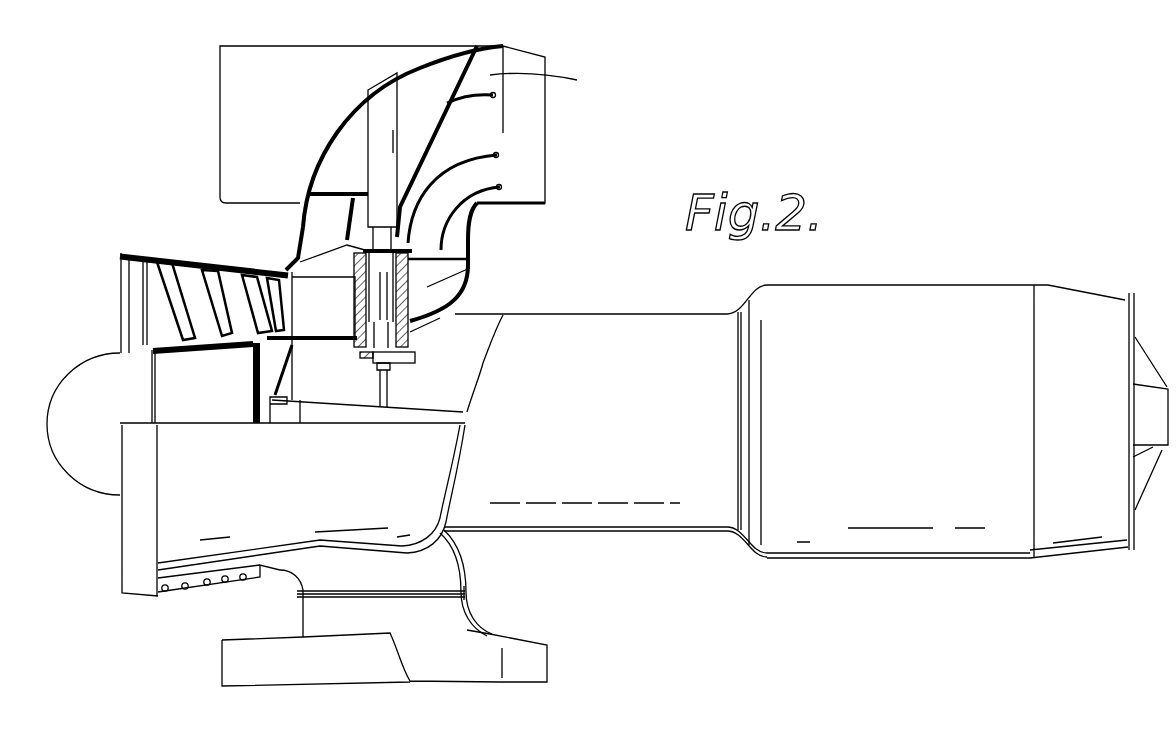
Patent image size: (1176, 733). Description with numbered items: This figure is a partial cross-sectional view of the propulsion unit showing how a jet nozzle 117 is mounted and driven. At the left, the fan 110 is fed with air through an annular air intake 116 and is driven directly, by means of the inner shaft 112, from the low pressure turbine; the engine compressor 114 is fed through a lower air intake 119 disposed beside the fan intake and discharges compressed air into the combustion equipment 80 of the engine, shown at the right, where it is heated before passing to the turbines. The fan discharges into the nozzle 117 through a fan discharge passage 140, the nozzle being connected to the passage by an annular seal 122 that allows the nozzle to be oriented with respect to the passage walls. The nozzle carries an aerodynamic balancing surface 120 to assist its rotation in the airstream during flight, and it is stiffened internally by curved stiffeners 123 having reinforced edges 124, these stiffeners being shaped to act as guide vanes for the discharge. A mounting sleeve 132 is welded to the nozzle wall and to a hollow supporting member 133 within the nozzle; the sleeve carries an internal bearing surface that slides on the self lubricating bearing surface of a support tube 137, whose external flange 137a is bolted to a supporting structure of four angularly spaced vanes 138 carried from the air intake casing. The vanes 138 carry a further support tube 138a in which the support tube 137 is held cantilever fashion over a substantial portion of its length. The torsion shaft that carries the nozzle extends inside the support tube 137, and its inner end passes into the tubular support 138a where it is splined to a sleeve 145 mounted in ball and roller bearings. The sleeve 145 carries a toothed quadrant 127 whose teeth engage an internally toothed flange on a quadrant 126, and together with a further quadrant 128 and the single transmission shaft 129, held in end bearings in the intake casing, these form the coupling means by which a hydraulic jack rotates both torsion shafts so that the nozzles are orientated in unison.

The combustion equipment 80 is at (922, 298).
The axial flow compressor or ducted fan 110 is at (212, 290).
The inner shaft 112 is at (415, 413).
The engine compressor 114 is at (645, 323).
The annular air intake 116 is at (128, 313).
The jet nozzle 117 is at (547, 108).
The lower air intake 119 is at (182, 507).
The aerodynamic balancing surface 120 is at (327, 127).
The annular seal 122 is at (470, 256).
The curved stiffener 123 is at (490, 158).
The reinforced edge 124 is at (470, 196).
The toothed quadrant 126 is at (410, 332).
The toothed quadrant 127 is at (360, 340).
The toothed quadrant 128 is at (372, 357).
The transmission shaft 129 is at (380, 405).
The mounting sleeve 132 is at (408, 125).
The hollow supporting member 133 is at (558, 81).
The support tube 137 is at (373, 236).
The external flange 137a is at (305, 255).
The vane 138 is at (470, 222).
The further support tube 138a is at (360, 300).
The fan discharge passage 140 is at (430, 266).
The sleeve 145 is at (427, 287).